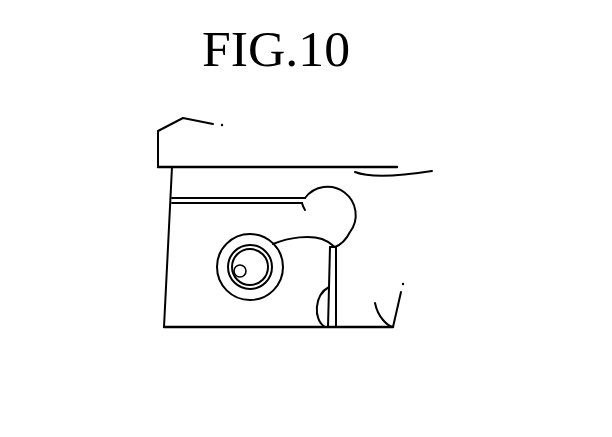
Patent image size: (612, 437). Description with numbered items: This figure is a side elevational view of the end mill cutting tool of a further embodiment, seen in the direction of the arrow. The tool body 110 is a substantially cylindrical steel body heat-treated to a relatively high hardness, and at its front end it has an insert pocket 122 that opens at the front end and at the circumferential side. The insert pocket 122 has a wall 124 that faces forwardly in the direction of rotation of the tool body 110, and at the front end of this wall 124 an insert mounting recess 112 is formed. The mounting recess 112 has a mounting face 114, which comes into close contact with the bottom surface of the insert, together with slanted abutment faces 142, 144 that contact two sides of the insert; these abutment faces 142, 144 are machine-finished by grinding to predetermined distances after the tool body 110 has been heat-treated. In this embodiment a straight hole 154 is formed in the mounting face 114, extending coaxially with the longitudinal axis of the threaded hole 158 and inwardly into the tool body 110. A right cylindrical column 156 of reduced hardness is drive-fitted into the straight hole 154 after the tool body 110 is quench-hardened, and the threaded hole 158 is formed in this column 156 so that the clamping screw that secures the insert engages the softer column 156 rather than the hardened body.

The tool body 110 is at (173, 142).
The insert mounting recess 112 is at (301, 276).
The mounting face 114 is at (192, 225).
The insert pocket 122 is at (418, 171).
The wall 124 is at (393, 327).
The abutment face 142 is at (325, 312).
The abutment face 144 is at (235, 202).
The straight hole 154 is at (348, 236).
The right cylindrical column 156 is at (218, 266).
The threaded hole 158 is at (238, 283).